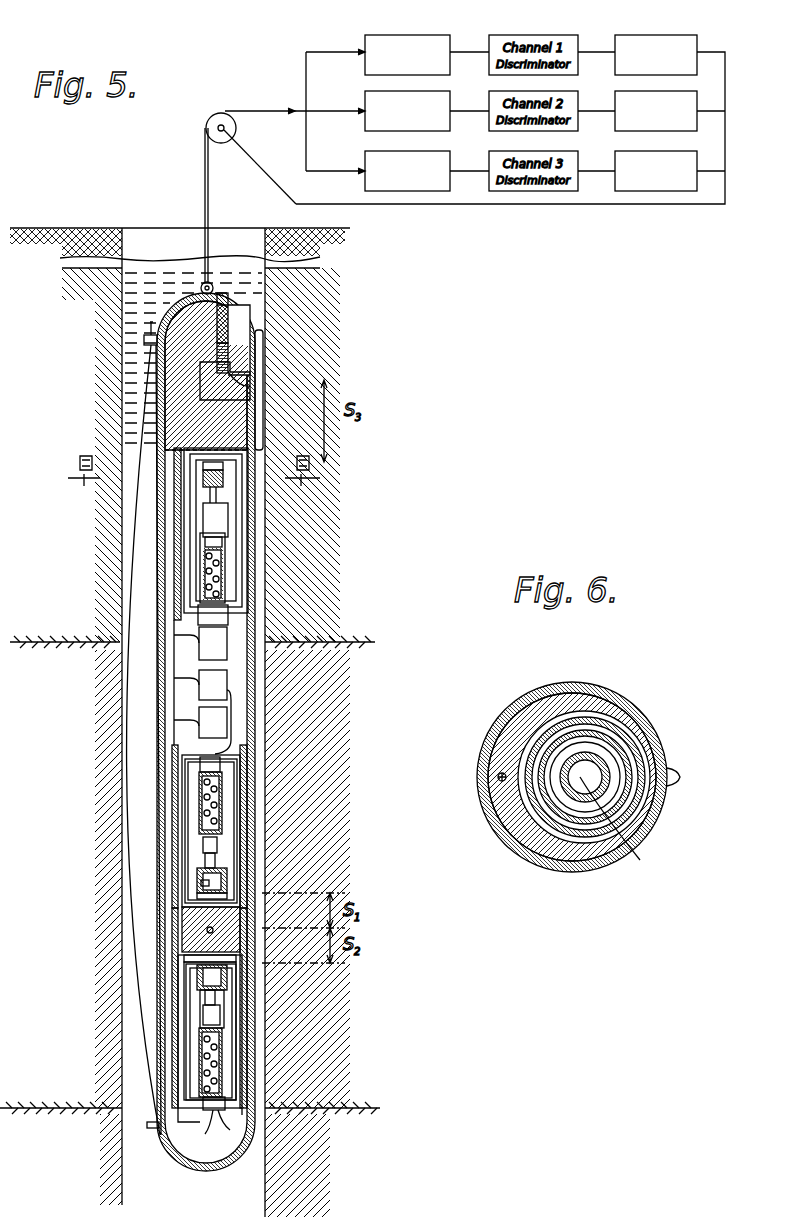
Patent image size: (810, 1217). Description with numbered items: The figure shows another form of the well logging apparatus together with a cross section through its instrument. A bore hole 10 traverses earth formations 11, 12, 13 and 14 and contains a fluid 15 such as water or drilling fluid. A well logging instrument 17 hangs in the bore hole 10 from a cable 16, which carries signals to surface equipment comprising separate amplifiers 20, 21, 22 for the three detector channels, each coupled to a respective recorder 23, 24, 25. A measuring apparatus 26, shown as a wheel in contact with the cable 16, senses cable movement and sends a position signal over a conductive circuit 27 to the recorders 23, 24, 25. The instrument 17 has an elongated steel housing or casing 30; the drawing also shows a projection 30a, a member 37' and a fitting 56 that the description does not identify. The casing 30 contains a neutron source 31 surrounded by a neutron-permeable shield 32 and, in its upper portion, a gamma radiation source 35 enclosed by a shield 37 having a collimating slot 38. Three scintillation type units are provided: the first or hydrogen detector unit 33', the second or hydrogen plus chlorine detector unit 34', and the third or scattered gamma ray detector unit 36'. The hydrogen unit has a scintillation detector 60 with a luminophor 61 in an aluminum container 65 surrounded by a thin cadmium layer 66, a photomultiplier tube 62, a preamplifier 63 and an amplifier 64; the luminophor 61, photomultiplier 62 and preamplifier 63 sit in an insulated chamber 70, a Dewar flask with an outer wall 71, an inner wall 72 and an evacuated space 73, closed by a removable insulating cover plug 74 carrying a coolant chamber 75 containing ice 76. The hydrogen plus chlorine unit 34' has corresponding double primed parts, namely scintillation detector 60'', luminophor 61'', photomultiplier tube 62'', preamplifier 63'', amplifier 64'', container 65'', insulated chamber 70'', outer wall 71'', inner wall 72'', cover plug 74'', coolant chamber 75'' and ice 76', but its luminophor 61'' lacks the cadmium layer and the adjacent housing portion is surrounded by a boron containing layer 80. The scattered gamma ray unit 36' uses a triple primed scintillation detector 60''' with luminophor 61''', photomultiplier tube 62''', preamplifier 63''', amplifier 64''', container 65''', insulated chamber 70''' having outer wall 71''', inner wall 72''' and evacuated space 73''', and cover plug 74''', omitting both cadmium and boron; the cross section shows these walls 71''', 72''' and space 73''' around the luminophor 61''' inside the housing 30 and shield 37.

In FIG. 5, the bore hole 10 is at (126, 242).
In FIG. 5, the earth formation 11 is at (18, 258).
In FIG. 5, the earth formation 12 is at (30, 394).
In FIG. 5, the earth formation 13 is at (62, 722).
In FIG. 5, the earth formation 14 is at (58, 1172).
In FIG. 5, the fluid 15 is at (193, 358).
In FIG. 5, the cable 16 is at (210, 203).
In FIG. 6, the cable 16 is at (498, 778).
In FIG. 5, the well logging instrument 17 is at (258, 336).
In FIG. 6, the well logging instrument 17 is at (522, 690).
In FIG. 5, the amplifier 20 is at (466, 36).
In FIG. 5, the amplifier 21 is at (466, 92).
In FIG. 5, the amplifier 22 is at (466, 150).
In FIG. 5, the recorder 23 is at (699, 46).
In FIG. 5, the recorder 24 is at (699, 98).
In FIG. 5, the recorder 25 is at (699, 157).
In FIG. 5, the measuring apparatus 26 is at (238, 125).
In FIG. 5, the conductive circuit 27 is at (267, 185).
In FIG. 5, the housing or casing 30 is at (248, 370).
In FIG. 6, the housing or casing 30 is at (566, 686).
In FIG. 5, the projection 30a is at (263, 402).
In FIG. 6, the projection 30a is at (680, 777).
In FIG. 5, the neutron source 31 is at (209, 934).
In FIG. 5, the neutron-permeable shield 32 is at (210, 930).
In FIG. 5, the first or hydrogen detector unit 33' is at (249, 826).
In FIG. 5, the second or hydrogen plus chlorine detector unit 34' is at (247, 1008).
In FIG. 5, the gamma radiation source 35 is at (228, 368).
In FIG. 5, the third or scattered gamma ray detector unit 36' is at (257, 534).
In FIG. 5, the shield 37 is at (155, 375).
In FIG. 6, the shield 37 is at (480, 723).
In FIG. 5, the pin 37' is at (272, 316).
In FIG. 5, the collimating slot 38 is at (245, 392).
In FIG. 5, the clamp 56 is at (144, 338).
In FIG. 5, the scintillation detector 60 is at (260, 876).
In FIG. 5, the scintillation detector 60'' is at (141, 1008).
In FIG. 5, the gamma radiation sensitive scintillation detector 60''' is at (275, 512).
In FIG. 5, the luminophor 61 is at (172, 896).
In FIG. 5, the luminophor 61'' is at (260, 977).
In FIG. 5, the luminophor 61''' is at (142, 506).
In FIG. 5, the photomultiplier tube 62 is at (175, 868).
In FIG. 5, the photomultiplier tube 62'' is at (264, 994).
In FIG. 5, the photomultiplier tube 62''' is at (142, 552).
In FIG. 5, the preamplifier 63 is at (176, 846).
In FIG. 5, the preamplifier 63'' is at (263, 1013).
In FIG. 5, the preamplifier 63''' is at (142, 574).
In FIG. 5, the amplifier 64 is at (213, 685).
In FIG. 5, the amplifier 64'' is at (213, 722).
In FIG. 5, the amplifier 64''' is at (213, 643).
In FIG. 5, the aluminum container 65 is at (263, 880).
In FIG. 5, the aluminum container 65'' is at (249, 951).
In FIG. 5, the aluminum container 65''' is at (142, 449).
In FIG. 5, the layer of neutron absorbing material 66 is at (227, 896).
In FIG. 5, the insulated chamber 70 is at (262, 806).
In FIG. 5, the insulated chamber 70'' is at (138, 1064).
In FIG. 5, the insulated chamber 70''' is at (273, 568).
In FIG. 5, the outer wall 71 is at (252, 831).
In FIG. 5, the outer wall 71'' is at (147, 1032).
In FIG. 5, the outer wall 71''' is at (265, 530).
In FIG. 5, the inner wall 72 is at (255, 828).
In FIG. 5, the inner wall 72'' is at (145, 1033).
In FIG. 5, the inner wall 72''' is at (271, 530).
In FIG. 5, the evacuated space 73 is at (253, 929).
In FIG. 5, the evacuated space 73''' is at (252, 517).
In FIG. 5, the insulating cover plug 74 is at (161, 740).
In FIG. 5, the insulating cover plug 74'' is at (224, 1121).
In FIG. 5, the insulating cover plug 74''' is at (272, 613).
In FIG. 5, the coolant chamber 75 is at (261, 785).
In FIG. 5, the coolant chamber 75'' is at (261, 1062).
In FIG. 5, the ice 76 is at (261, 744).
In FIG. 5, the lead 76' is at (208, 1127).
In FIG. 5, the layer of high thermal neutron capture material 80 is at (242, 1032).